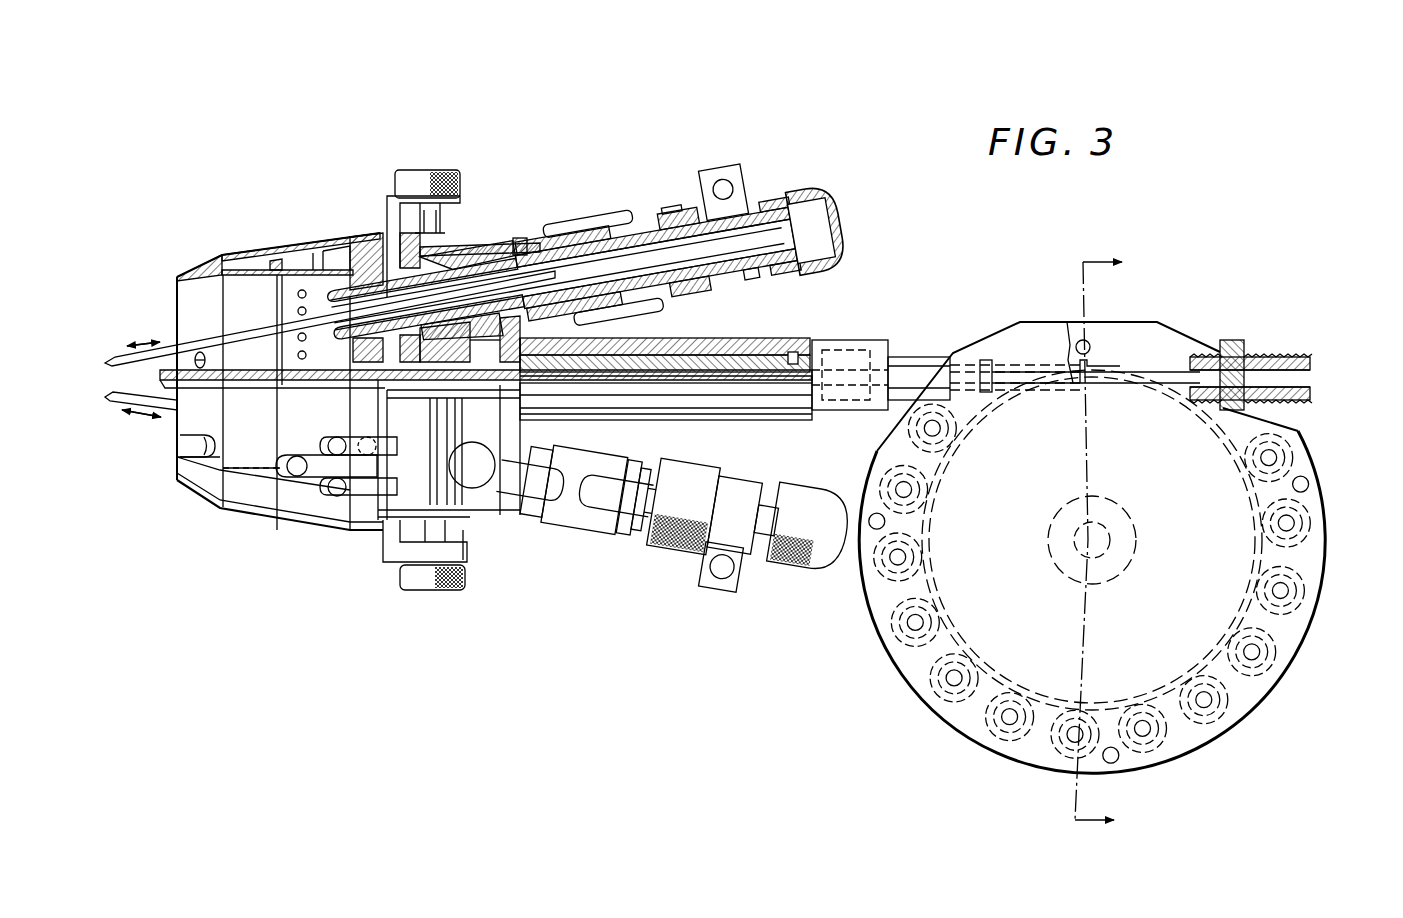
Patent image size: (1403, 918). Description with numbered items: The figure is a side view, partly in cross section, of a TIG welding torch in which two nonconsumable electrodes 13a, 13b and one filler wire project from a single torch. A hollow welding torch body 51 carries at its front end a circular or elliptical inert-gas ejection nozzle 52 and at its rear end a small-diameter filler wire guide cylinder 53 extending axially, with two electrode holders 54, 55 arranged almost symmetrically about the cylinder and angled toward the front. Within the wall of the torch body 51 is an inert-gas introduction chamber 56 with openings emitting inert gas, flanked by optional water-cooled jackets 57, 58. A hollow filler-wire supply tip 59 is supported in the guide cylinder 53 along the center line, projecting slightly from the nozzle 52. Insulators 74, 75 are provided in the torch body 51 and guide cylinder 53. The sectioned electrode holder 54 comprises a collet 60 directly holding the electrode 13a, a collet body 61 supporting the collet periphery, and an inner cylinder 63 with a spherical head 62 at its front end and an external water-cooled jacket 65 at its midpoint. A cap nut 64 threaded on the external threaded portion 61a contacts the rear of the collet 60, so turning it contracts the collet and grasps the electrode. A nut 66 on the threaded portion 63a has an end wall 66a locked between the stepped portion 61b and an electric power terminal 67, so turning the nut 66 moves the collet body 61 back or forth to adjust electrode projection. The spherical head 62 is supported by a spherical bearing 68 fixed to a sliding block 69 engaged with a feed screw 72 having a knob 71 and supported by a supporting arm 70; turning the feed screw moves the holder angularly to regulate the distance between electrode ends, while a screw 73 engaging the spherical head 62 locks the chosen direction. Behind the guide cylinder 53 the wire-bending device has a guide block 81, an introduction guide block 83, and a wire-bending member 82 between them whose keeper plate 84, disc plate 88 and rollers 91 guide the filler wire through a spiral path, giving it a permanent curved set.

The nonconsumable electrode 13a is at (113, 355).
The nonconsumable electrode 13b is at (118, 404).
The welding torch body 51 is at (325, 532).
The inert-gas ejection nozzle 52 is at (182, 296).
The filler wire guide cylinder 53 is at (790, 418).
The electrode holder 54 is at (633, 218).
The electrode holder 55 is at (633, 537).
The inert-gas introduction chamber 56 is at (290, 255).
The water-cooled jacket 57 is at (240, 262).
The water-cooled jacket 58 is at (330, 246).
The filler-wire supply tip 59 is at (244, 385).
The collet 60 is at (752, 272).
The collet body 61 is at (638, 297).
The external threaded portion 61a is at (766, 206).
The stepped portion 61b is at (670, 232).
The spherical head 62 is at (480, 268).
The inner cylinder 63 is at (538, 244).
The external threaded portion 63a is at (684, 226).
The cap nut 64 is at (842, 238).
The external water-cooled jacket 65 is at (588, 234).
The nut 66 is at (702, 283).
The end wall 66a is at (706, 226).
The electric power terminal 67 is at (742, 188).
The spherical bearing 68 is at (488, 252).
The sliding block 69 is at (458, 250).
The supporting arm 70 is at (405, 250).
The knob 71 is at (430, 178).
The feed screw 72 is at (390, 212).
The screw 73 is at (478, 480).
The insulator 74 is at (358, 245).
The insulator 75 is at (776, 348).
The guide block 81 is at (870, 340).
The wire-bending member 82 is at (915, 702).
The introduction guide block 83 is at (1278, 362).
The keeper plate 84 is at (1324, 568).
The disc plate 88 is at (1147, 625).
The roller 91 is at (1210, 702).